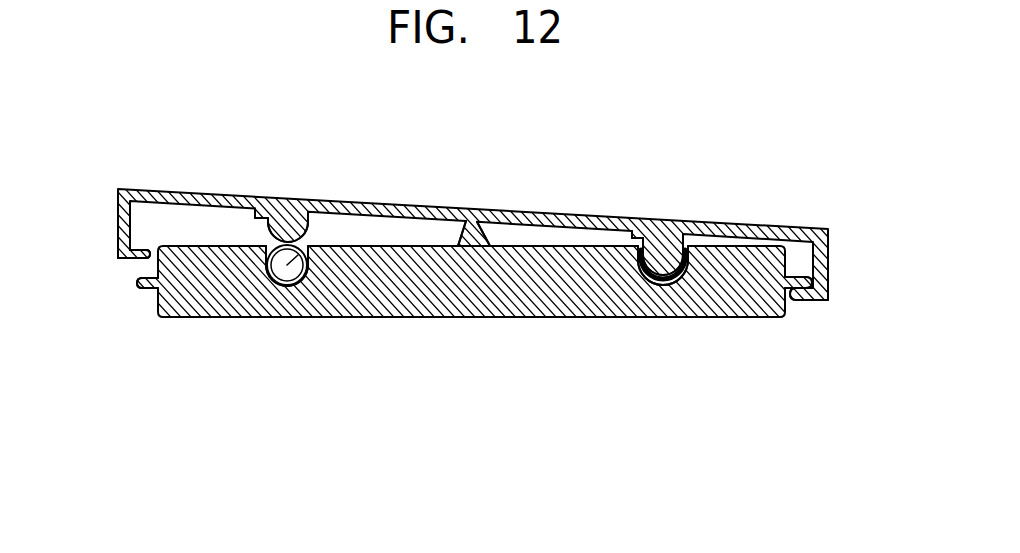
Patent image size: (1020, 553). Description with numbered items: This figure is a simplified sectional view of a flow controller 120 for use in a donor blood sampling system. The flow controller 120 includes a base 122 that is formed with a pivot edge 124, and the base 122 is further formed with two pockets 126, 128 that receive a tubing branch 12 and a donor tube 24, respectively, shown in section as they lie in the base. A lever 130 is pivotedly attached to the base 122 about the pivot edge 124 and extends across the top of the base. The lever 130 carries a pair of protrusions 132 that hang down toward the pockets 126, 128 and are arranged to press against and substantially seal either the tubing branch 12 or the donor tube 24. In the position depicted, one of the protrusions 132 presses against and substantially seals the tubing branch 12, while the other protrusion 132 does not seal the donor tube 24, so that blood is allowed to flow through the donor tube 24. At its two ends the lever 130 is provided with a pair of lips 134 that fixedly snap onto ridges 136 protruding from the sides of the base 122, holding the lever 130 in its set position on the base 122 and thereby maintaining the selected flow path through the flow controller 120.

The tubing branch 12 is at (665, 290).
The donor tube 24 is at (275, 284).
The flow controller 120 is at (740, 363).
The base 122 is at (445, 317).
The pivot edge 124 is at (468, 218).
The pocket 126 is at (633, 290).
The pocket 128 is at (298, 286).
The lever 130 is at (550, 216).
The protrusions 132 is at (263, 198).
The lips 134 is at (140, 258).
The ridges 136 is at (140, 288).